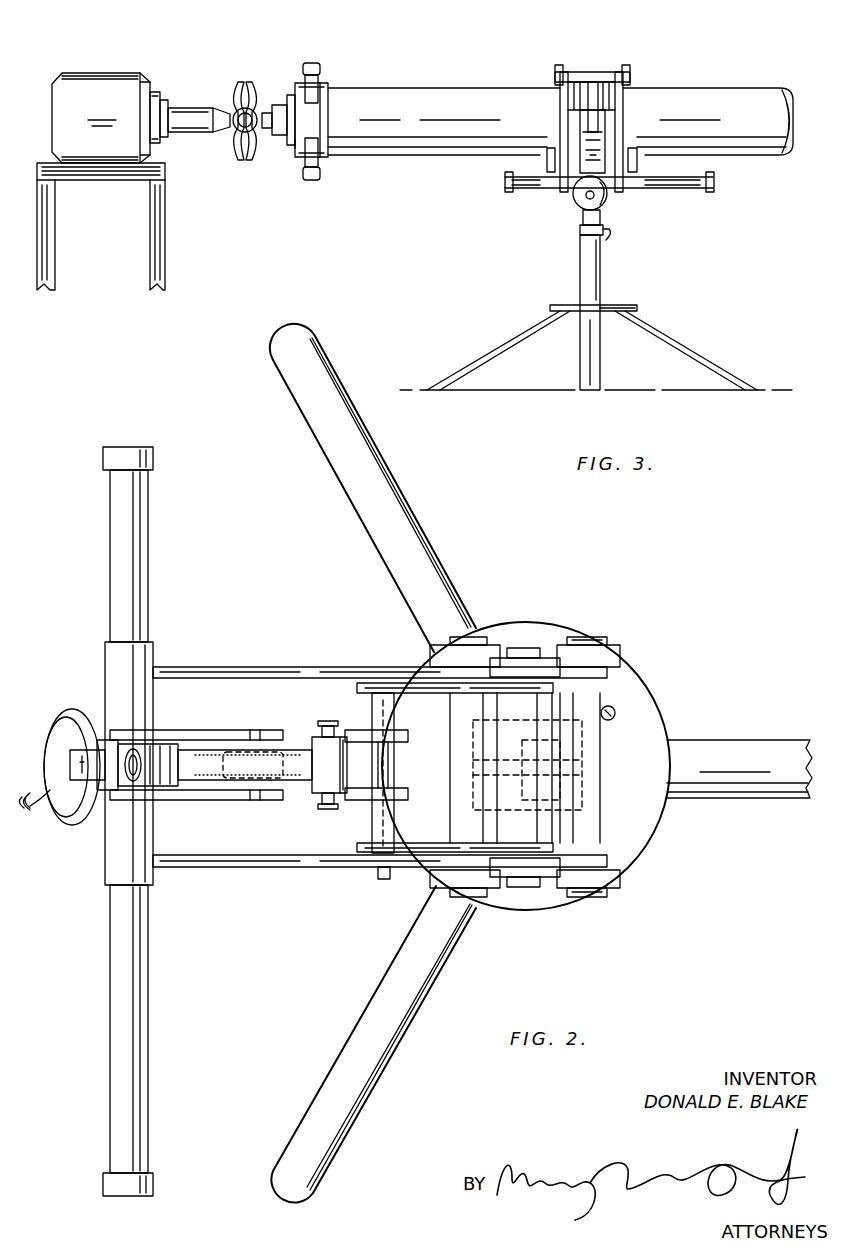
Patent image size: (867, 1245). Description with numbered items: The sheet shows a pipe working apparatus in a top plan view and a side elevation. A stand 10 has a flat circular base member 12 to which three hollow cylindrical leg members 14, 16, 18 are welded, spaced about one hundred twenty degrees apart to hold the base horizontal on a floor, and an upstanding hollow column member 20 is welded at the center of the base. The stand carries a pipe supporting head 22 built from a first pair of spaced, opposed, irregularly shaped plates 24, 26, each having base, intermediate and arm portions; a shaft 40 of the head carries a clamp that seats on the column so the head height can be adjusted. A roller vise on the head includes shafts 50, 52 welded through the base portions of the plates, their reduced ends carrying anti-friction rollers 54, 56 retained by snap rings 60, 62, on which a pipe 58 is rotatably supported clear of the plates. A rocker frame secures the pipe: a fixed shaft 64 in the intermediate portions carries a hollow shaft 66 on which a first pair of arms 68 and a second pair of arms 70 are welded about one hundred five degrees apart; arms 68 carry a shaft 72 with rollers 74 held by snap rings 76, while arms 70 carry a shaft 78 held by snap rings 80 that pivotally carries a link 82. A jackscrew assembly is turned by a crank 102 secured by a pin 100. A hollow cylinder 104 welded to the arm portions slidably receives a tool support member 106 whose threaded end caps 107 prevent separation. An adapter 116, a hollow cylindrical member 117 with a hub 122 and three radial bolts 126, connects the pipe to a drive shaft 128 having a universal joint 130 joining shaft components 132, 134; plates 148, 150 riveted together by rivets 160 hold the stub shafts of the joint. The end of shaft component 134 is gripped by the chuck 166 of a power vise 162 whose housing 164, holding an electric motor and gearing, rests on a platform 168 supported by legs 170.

In FIG. 3, the stand 10 is at (596, 334).
In FIG. 3, the base member 12 is at (562, 305).
In FIG. 2, the base member 12 is at (654, 820).
In FIG. 2, the leg member 14 is at (325, 1066).
In FIG. 2, the leg member 16 is at (752, 746).
In FIG. 2, the leg member 18 is at (330, 466).
In FIG. 3, the column member 20 is at (600, 281).
In FIG. 3, the pipe supporting head 22 is at (609, 106).
In FIG. 3, the plate 24 is at (623, 104).
In FIG. 2, the plate 24 is at (215, 867).
In FIG. 3, the plate 26 is at (560, 104).
In FIG. 2, the plate 26 is at (257, 673).
In FIG. 3, the shaft 40 is at (581, 211).
In FIG. 2, the shaft 50 is at (603, 766).
In FIG. 2, the shaft 52 is at (452, 761).
In FIG. 2, the rollers 54 is at (618, 653).
In FIG. 2, the rollers 56 is at (432, 653).
In FIG. 3, the pipe 58 is at (467, 97).
In FIG. 2, the snap rings 60 is at (605, 645).
In FIG. 2, the snap rings 62 is at (492, 640).
In FIG. 2, the shaft 64 is at (385, 878).
In FIG. 2, the hollow shaft 66 is at (362, 711).
In FIG. 2, the arms 68 is at (418, 693).
In FIG. 2, the arms 70 is at (360, 733).
In FIG. 2, the shaft 72 is at (522, 650).
In FIG. 2, the rollers 74 is at (532, 660).
In FIG. 2, the snap rings 76 is at (585, 637).
In FIG. 2, the shaft 78 is at (326, 725).
In FIG. 2, the snap rings 80 is at (316, 723).
In FIG. 2, the link 82 is at (298, 785).
In FIG. 2, the pin 100 is at (86, 744).
In FIG. 2, the crank 102 is at (78, 714).
In FIG. 2, the hollow cylinder 104 is at (110, 666).
In FIG. 2, the tool support member 106 is at (148, 531).
In FIG. 2, the end caps 107 is at (136, 447).
In FIG. 3, the adapter 116 is at (320, 113).
In FIG. 3, the cylindrical member 117 is at (328, 105).
In FIG. 3, the hub 122 is at (281, 104).
In FIG. 3, the bolts 126 is at (322, 68).
In FIG. 3, the drive shaft 128 is at (190, 92).
In FIG. 3, the universal joint 130 is at (238, 102).
In FIG. 3, the shaft component 132 is at (268, 142).
In FIG. 3, the shaft component 134 is at (203, 125).
In FIG. 3, the plate 148 is at (237, 160).
In FIG. 3, the plate 150 is at (253, 158).
In FIG. 3, the rivets 160 is at (240, 104).
In FIG. 3, the power vise 162 is at (125, 63).
In FIG. 3, the housing 164 is at (102, 111).
In FIG. 3, the chuck 166 is at (165, 143).
In FIG. 3, the platform 168 is at (125, 176).
In FIG. 3, the legs 170 is at (148, 268).